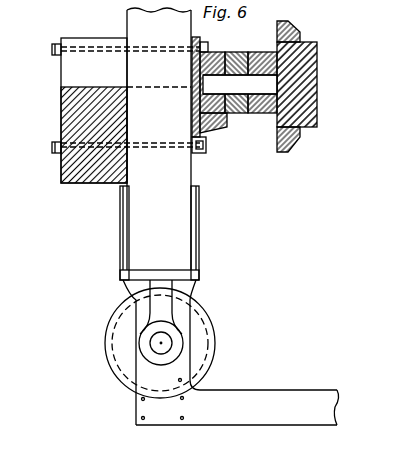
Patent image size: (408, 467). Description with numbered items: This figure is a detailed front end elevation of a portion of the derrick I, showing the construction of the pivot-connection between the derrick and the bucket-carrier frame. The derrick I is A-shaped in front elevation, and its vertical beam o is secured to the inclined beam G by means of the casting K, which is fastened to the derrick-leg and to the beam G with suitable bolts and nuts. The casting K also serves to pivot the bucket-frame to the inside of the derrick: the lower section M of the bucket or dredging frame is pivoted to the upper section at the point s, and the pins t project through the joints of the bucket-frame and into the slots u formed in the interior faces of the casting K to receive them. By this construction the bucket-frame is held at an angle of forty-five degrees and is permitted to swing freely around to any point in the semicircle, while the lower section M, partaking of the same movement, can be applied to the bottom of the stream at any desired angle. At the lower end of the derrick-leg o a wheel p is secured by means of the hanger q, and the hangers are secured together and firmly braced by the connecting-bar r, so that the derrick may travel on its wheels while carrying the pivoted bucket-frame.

The beams G is at (61, 124).
The slots u is at (191, 96).
The vertical beams o is at (159, 139).
The pivot point s is at (262, 48).
The casting K is at (238, 104).
The pins t is at (255, 113).
The lower section of the bucket-frame M is at (314, 86).
The derrick I is at (183, 248).
The hangers q is at (177, 320).
The wheels p is at (210, 345).
The connecting-bars r is at (305, 411).